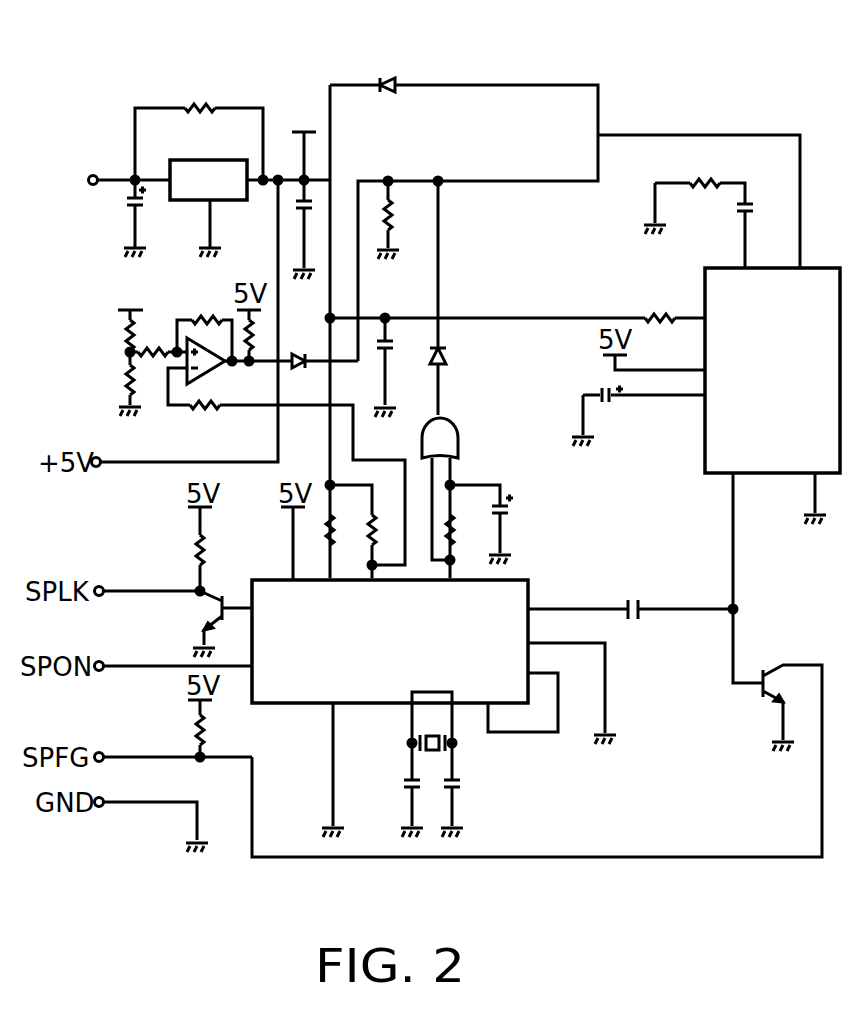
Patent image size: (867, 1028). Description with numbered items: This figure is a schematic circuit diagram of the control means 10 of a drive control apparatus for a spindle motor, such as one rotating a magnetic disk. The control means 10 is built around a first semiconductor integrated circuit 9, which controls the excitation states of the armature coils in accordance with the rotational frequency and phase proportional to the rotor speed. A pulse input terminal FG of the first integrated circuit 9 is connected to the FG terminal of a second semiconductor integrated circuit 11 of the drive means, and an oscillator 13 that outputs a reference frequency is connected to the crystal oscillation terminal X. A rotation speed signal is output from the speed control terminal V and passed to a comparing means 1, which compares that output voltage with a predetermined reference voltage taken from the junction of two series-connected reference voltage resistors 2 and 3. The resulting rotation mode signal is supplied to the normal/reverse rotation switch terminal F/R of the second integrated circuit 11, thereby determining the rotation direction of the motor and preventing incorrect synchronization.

The comparing means 1 is at (210, 371).
The reference voltage resistor 2 is at (125, 325).
The reference voltage resistor 3 is at (125, 378).
The semiconductor integrated circuit (IC1) 9 is at (528, 590).
The control means 10 is at (173, 80).
The semiconductor integrated circuit (IC2) 11 is at (705, 292).
The oscillator 13 is at (412, 752).